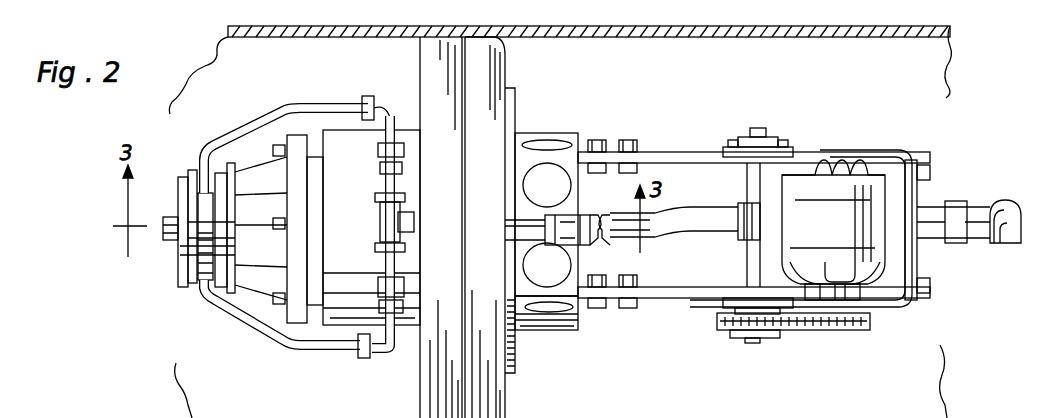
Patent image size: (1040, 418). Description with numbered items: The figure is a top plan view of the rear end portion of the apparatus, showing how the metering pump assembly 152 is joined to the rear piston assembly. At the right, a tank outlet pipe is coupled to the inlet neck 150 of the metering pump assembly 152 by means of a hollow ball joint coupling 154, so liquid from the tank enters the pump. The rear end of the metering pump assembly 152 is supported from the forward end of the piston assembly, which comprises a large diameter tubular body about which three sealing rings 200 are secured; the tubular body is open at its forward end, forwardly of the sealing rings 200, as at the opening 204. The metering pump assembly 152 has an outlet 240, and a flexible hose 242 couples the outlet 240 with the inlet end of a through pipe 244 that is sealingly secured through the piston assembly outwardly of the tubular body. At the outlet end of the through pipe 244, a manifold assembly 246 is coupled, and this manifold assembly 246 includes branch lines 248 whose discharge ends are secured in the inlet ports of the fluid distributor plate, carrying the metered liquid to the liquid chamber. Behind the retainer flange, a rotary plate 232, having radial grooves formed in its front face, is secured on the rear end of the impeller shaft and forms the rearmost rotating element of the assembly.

The sealing rings 200 is at (483, 79).
The through pipe 244 is at (523, 225).
The forward end opening of the tubular body 204 is at (545, 280).
The outlet 240 is at (735, 226).
The flexible hose 242 is at (695, 183).
The metering pump assembly 152 is at (841, 150).
The inlet neck 150 is at (933, 222).
The hollow ball joint coupling 154 is at (1013, 244).
The rotary plate 232 is at (152, 265).
The branch lines 248 is at (243, 137).
The manifold assembly 246 is at (343, 230).